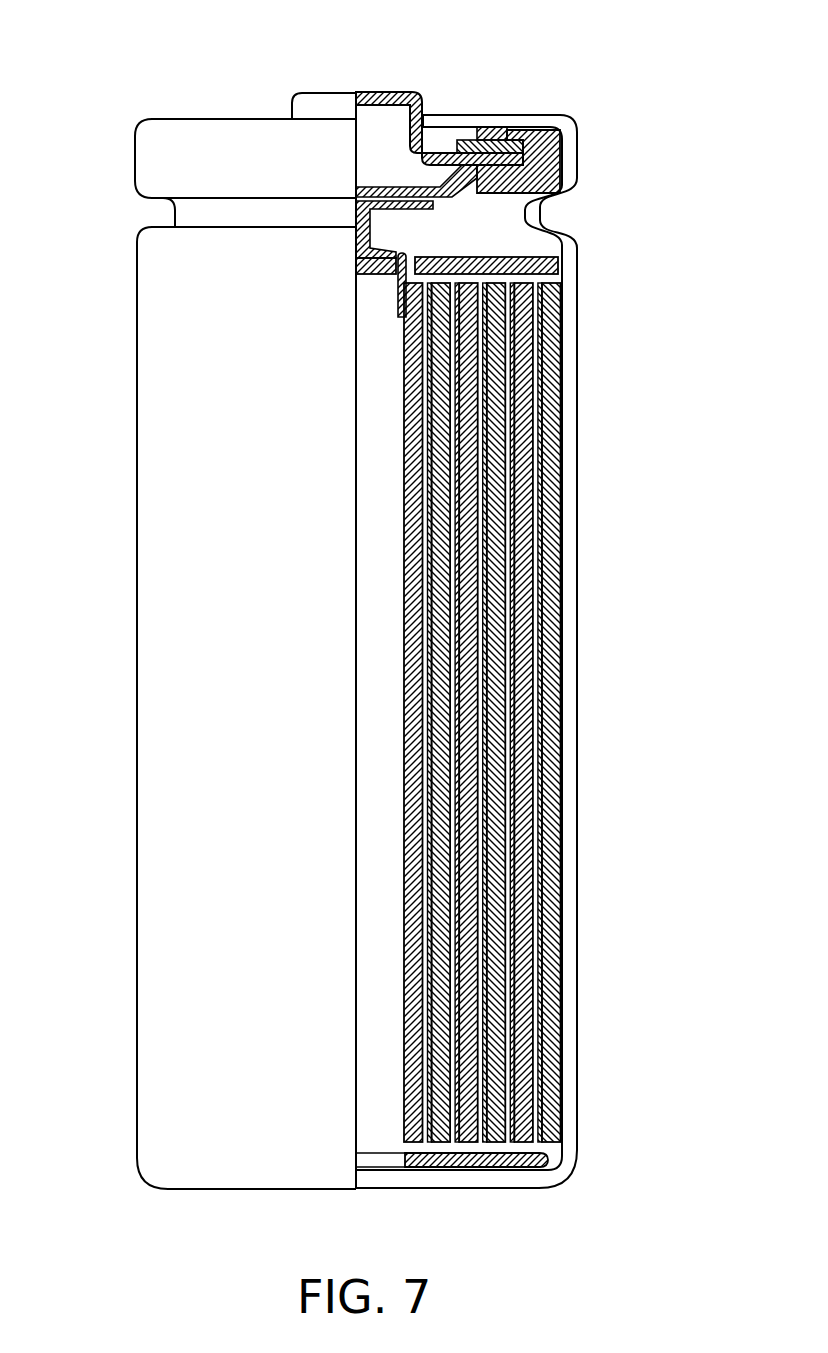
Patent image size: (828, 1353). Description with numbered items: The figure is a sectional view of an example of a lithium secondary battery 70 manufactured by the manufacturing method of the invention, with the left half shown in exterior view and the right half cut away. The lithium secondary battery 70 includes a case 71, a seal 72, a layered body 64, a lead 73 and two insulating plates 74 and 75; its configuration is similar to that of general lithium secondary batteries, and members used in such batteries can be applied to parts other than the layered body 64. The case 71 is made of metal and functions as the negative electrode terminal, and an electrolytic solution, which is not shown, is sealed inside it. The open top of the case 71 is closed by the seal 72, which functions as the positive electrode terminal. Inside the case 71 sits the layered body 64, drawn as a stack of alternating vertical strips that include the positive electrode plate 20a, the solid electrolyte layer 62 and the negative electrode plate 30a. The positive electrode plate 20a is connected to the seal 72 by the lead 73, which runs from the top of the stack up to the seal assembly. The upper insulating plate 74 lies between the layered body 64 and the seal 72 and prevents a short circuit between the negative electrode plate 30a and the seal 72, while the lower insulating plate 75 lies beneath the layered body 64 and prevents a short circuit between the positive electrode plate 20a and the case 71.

The lithium secondary battery 70 is at (170, 88).
The case 71 is at (568, 575).
The seal 72 is at (540, 135).
The lead 73 is at (372, 224).
The insulating plate 74 is at (558, 256).
The insulating plate 75 is at (441, 1165).
The layered body 64 is at (662, 360).
The positive electrode plate 20a is at (538, 390).
The negative electrode plate 30a is at (548, 438).
The solid electrolyte layer 62 is at (537, 480).